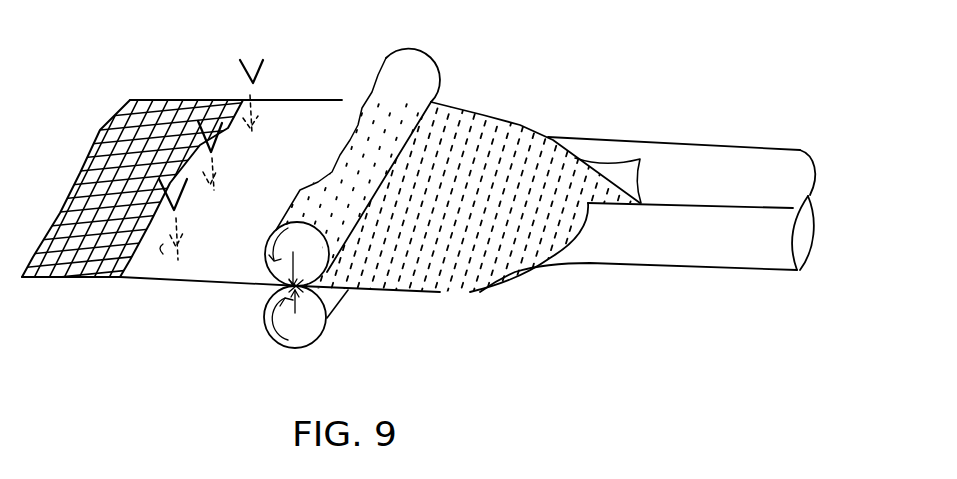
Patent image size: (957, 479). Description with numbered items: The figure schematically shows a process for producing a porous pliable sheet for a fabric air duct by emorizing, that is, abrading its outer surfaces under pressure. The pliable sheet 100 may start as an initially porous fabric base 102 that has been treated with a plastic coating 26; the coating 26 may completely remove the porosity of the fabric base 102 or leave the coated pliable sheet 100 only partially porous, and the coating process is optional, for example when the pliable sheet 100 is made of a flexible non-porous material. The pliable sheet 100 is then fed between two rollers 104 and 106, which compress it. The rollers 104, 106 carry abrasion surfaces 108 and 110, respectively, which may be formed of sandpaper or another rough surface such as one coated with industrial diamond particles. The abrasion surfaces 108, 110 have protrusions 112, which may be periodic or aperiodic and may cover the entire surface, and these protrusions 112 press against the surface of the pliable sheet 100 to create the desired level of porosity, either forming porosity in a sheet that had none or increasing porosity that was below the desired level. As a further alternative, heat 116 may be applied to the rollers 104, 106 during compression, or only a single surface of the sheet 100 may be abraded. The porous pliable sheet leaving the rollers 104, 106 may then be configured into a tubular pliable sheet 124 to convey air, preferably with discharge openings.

The plastic coating 26 is at (257, 110).
The pliable sheet 100 is at (177, 273).
The fabric base 102 is at (143, 110).
The roller 104 is at (432, 58).
The roller 106 is at (319, 325).
The abrasion surface 108 is at (487, 113).
The abrasion surface 110 is at (335, 297).
The protrusions 112 is at (379, 57).
The heat 116 is at (397, 74).
The tubular pliable sheet 124 is at (707, 150).